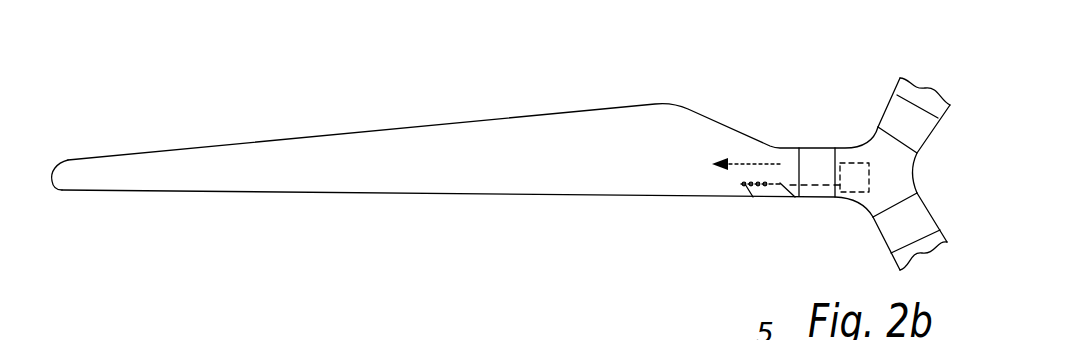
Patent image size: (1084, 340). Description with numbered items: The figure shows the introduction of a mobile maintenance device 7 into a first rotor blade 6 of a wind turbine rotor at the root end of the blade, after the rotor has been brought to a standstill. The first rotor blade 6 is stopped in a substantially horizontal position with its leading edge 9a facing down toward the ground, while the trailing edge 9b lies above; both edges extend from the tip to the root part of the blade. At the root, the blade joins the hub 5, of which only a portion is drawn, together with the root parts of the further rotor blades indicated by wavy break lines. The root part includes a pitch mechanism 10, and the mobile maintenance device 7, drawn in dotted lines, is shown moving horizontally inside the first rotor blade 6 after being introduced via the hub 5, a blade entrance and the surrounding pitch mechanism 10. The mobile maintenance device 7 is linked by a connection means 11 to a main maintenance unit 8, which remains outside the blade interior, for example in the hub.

The hub 5 is at (838, 112).
The first rotor blade 6 is at (256, 98).
The mobile maintenance device 7 is at (755, 197).
The main maintenance unit 8 is at (858, 192).
The leading edge 9a is at (510, 194).
The trailing edge 9b is at (480, 121).
The pitch mechanism 10 is at (827, 197).
The connection means 11 is at (797, 197).